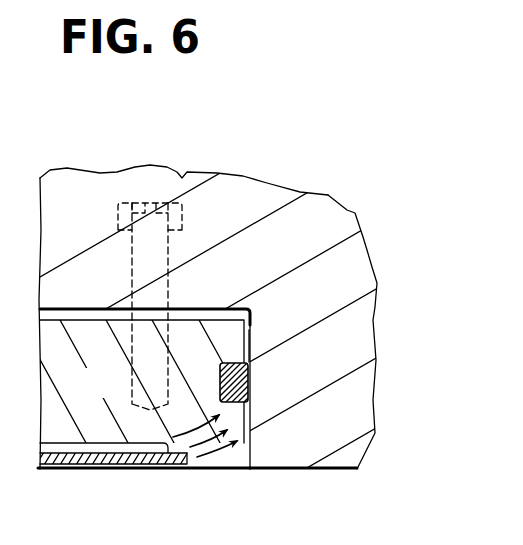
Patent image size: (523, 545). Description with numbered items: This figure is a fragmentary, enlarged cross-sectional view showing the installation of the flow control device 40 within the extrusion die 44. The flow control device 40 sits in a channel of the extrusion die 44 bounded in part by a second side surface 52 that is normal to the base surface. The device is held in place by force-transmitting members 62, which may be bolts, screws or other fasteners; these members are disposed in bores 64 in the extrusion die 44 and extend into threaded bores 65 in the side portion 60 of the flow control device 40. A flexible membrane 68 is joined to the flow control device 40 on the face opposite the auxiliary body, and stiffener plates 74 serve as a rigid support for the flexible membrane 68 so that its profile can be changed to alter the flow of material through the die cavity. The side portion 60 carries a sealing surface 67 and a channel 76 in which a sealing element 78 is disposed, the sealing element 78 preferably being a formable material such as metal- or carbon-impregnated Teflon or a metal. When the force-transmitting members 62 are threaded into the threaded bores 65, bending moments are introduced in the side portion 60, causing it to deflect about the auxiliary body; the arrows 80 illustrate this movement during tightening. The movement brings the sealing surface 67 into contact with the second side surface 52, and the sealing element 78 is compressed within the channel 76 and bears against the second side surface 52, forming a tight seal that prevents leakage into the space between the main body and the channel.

The flow control device 40 is at (116, 396).
The extrusion die 44 is at (86, 239).
The second side surface 52 is at (246, 308).
The side portion 60 is at (232, 445).
The force-transmitting members 62 is at (133, 165).
The bores 64 is at (179, 171).
The threaded bores 65 is at (222, 178).
The sealing surface 67 is at (292, 468).
The flexible membrane 68 is at (107, 464).
The stiffener plates 74 is at (60, 456).
The channel 76 is at (250, 349).
The sealing element 78 is at (249, 383).
The arrows 80 is at (197, 454).